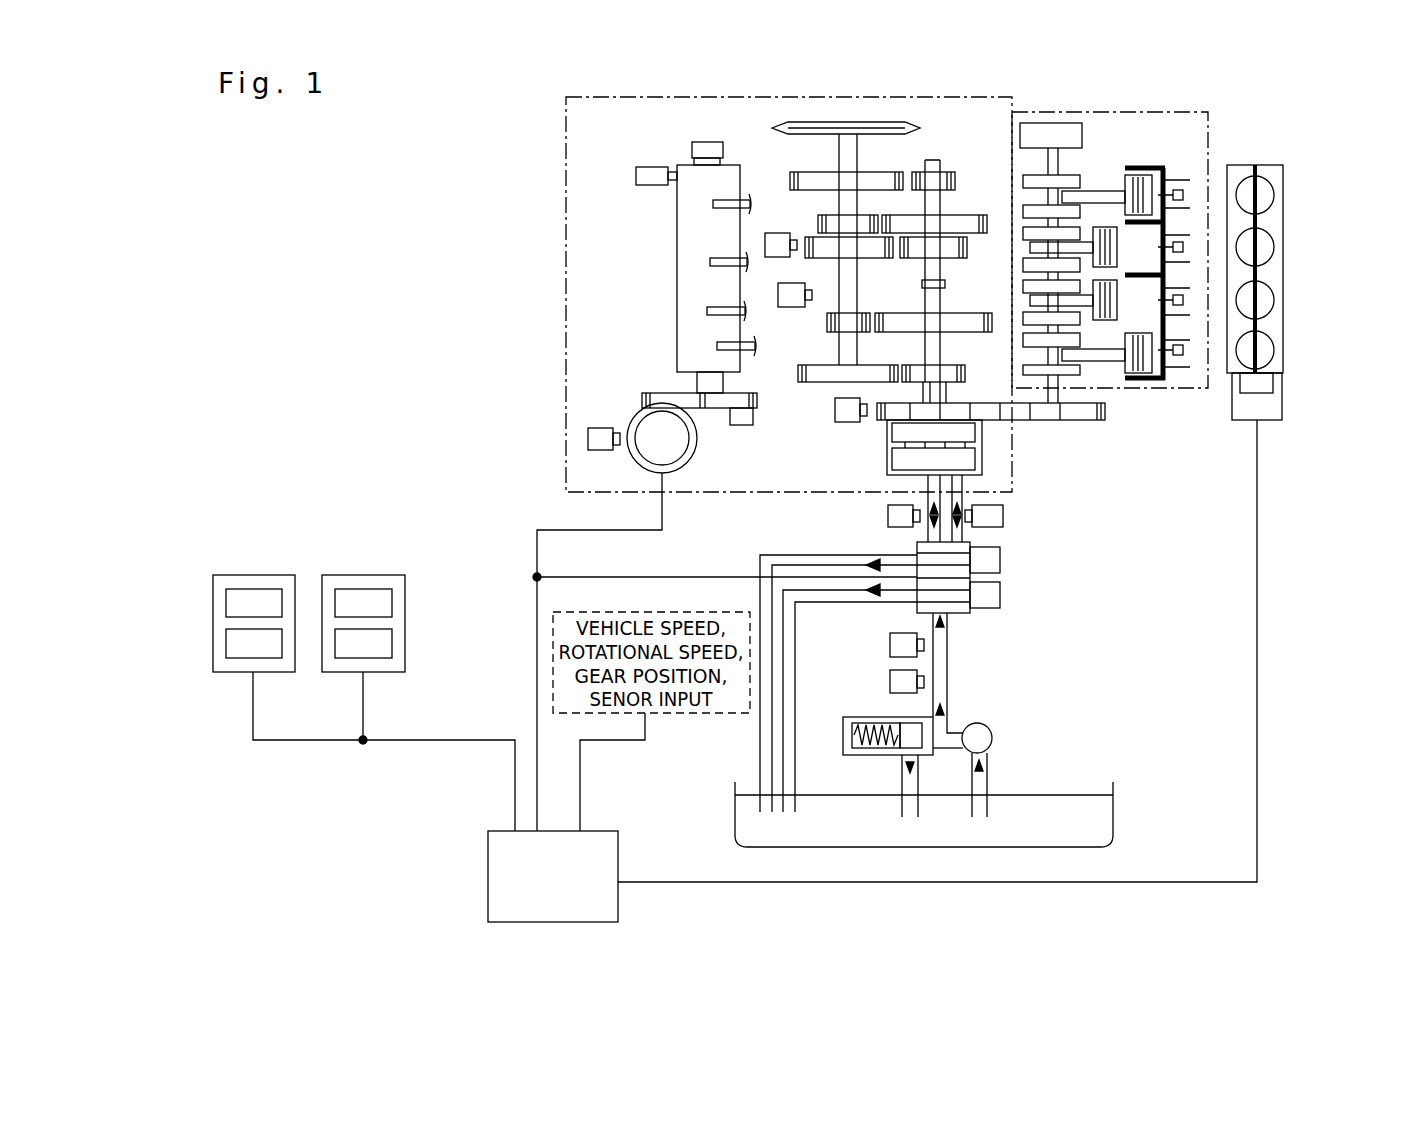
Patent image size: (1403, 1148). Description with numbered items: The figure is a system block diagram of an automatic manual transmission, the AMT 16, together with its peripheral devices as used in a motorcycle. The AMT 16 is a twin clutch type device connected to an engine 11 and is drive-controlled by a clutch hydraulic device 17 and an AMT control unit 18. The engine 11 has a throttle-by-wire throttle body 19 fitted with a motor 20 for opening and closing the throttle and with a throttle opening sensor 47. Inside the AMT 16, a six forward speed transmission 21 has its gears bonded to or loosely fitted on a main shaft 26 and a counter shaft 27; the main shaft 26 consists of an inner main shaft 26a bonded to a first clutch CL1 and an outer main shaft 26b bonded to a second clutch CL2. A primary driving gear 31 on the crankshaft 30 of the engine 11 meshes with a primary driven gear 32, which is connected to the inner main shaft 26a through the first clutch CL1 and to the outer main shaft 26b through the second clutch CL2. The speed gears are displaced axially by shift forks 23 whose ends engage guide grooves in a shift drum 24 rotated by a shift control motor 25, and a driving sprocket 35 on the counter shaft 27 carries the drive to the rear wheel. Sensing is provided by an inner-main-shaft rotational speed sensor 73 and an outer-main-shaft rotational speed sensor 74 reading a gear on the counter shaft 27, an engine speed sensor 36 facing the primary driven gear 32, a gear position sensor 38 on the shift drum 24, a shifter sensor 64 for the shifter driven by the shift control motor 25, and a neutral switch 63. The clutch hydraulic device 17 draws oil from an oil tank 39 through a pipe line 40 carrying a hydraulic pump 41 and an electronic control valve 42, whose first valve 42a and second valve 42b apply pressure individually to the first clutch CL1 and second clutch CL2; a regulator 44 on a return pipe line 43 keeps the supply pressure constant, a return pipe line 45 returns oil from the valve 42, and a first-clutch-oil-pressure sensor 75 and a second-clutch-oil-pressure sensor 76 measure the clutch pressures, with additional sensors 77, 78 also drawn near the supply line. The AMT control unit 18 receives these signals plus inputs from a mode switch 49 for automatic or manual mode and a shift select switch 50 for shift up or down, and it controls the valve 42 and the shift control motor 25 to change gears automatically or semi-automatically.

The engine 11 is at (1212, 128).
The automatic manual transmission (AMT) 16 is at (564, 188).
The clutch hydraulic device 17 is at (862, 661).
The AMT control unit 18 is at (602, 828).
The throttle body 19 is at (1285, 180).
The motor 20 is at (1283, 420).
The transmission 21 is at (898, 287).
The shift forks 23 is at (715, 204).
The shift drum 24 is at (738, 172).
The shift control motor 25 is at (638, 418).
The main shaft 26 is at (946, 270).
The inner main shaft 26a is at (938, 395).
The outer main shaft 26b is at (920, 393).
The counter shaft 27 is at (845, 357).
The crankshaft 30 is at (1063, 397).
The primary driving gear 31 is at (1107, 415).
The primary driven gear 32 is at (962, 465).
The driving sprocket 35 is at (835, 125).
The engine speed sensor 36 is at (835, 410).
The gear position sensor 38 is at (692, 150).
The oil tank 39 is at (740, 812).
The pipe line 40 is at (948, 690).
The hydraulic pump 41 is at (995, 742).
The valve (electronic control valve) 42 is at (1024, 578).
The first valve 42a is at (1000, 562).
The second valve 42b is at (1000, 595).
The return pipe line 43 is at (902, 775).
The regulator 44 is at (852, 718).
The return pipe line of oil 45 is at (783, 745).
The throttle opening sensor 47 is at (1275, 385).
The mode switch 49 is at (388, 573).
The shift select switch 50 is at (265, 573).
The neutral switch 63 is at (636, 175).
The shifter sensor 64 is at (600, 450).
The inner-main-shaft rotational speed sensor 73 is at (765, 245).
The outer-main-shaft rotational speed sensor 74 is at (778, 295).
The first-clutch-oil-pressure sensor 75 is at (1003, 516).
The second-clutch-oil-pressure sensor 76 is at (888, 514).
The sensor 77 is at (890, 645).
The sensor 78 is at (890, 682).
The first clutch CL1 is at (970, 465).
The second clutch CL2 is at (967, 437).